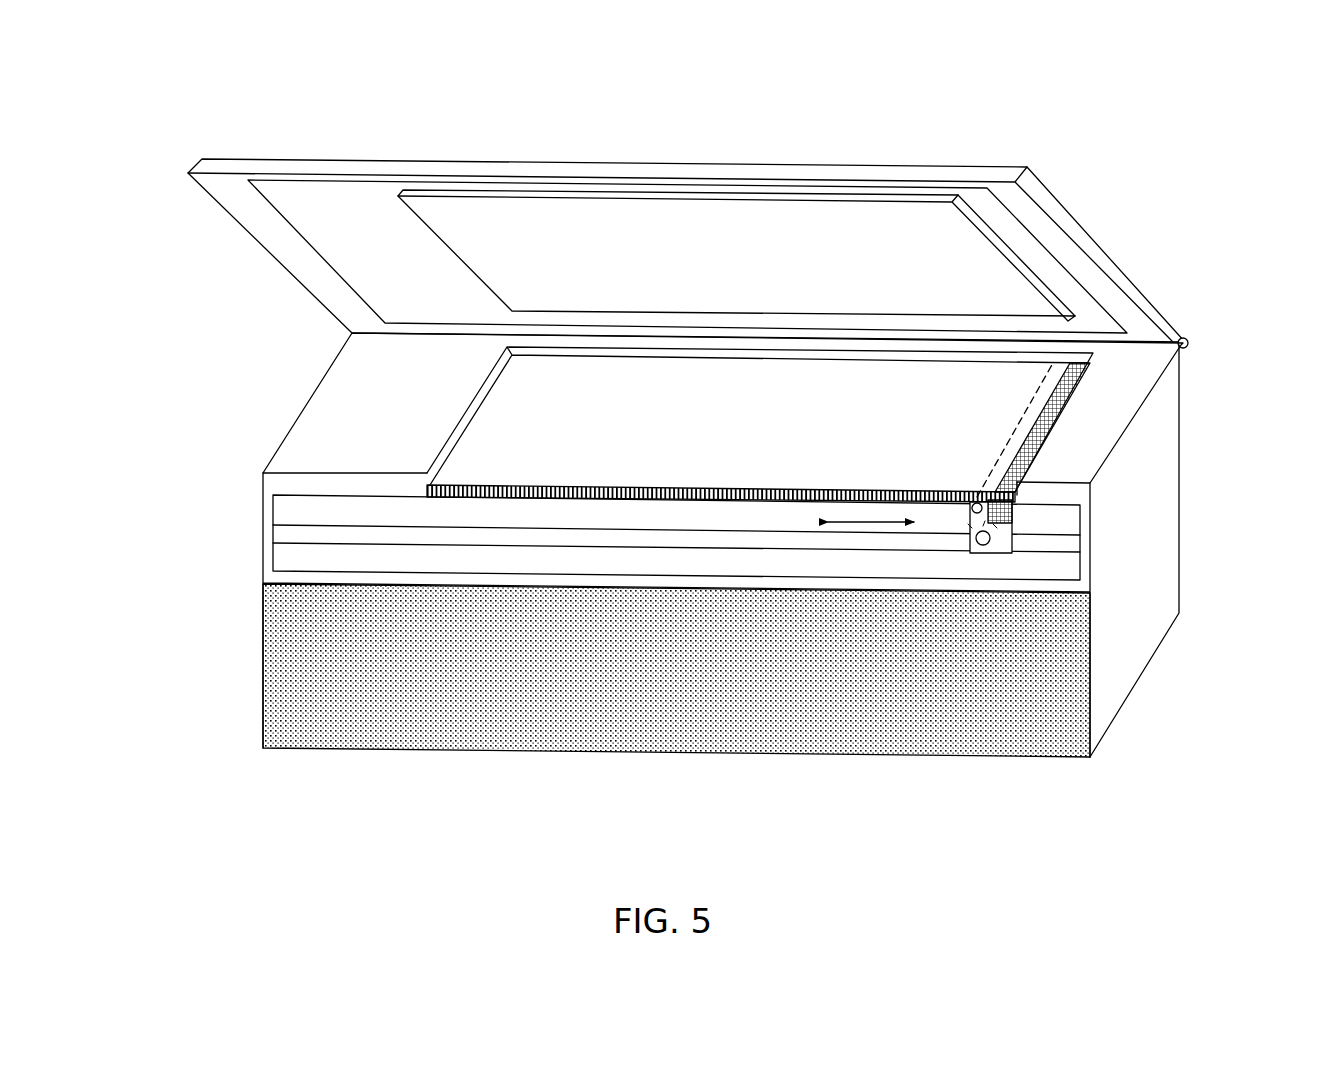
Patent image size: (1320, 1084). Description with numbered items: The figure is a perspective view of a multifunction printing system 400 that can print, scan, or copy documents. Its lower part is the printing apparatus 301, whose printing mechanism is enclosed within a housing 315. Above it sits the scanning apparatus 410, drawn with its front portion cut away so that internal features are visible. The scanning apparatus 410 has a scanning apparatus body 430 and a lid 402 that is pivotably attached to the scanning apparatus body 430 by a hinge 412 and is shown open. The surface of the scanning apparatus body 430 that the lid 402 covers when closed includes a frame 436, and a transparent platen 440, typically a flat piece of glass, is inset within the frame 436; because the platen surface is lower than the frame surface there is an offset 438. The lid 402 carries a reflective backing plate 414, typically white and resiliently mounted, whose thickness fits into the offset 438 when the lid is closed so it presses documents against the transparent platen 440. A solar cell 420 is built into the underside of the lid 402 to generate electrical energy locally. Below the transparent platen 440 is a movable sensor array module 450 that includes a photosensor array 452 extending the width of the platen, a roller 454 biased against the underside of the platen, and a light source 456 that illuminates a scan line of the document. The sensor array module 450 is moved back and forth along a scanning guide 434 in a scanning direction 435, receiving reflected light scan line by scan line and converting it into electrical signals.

The multifunction printing system 400 is at (360, 91).
The lid 402 is at (737, 237).
The hinge 412 is at (1190, 343).
The reflective backing plate 414 is at (562, 207).
The solar cell 420 is at (337, 244).
The scanning apparatus 410 is at (228, 462).
The frame 436 is at (362, 440).
The offset 438 is at (490, 375).
The transparent platen 440 is at (520, 423).
The scanning apparatus body 430 is at (263, 502).
The scanning guide 434 is at (287, 535).
The scanning direction 435 is at (872, 523).
The sensor array module 450 is at (1062, 493).
The photosensor array 452 is at (1010, 528).
The roller 454 is at (973, 497).
The light source 456 is at (1000, 557).
The printing apparatus 301 is at (622, 675).
The housing 315 is at (263, 722).